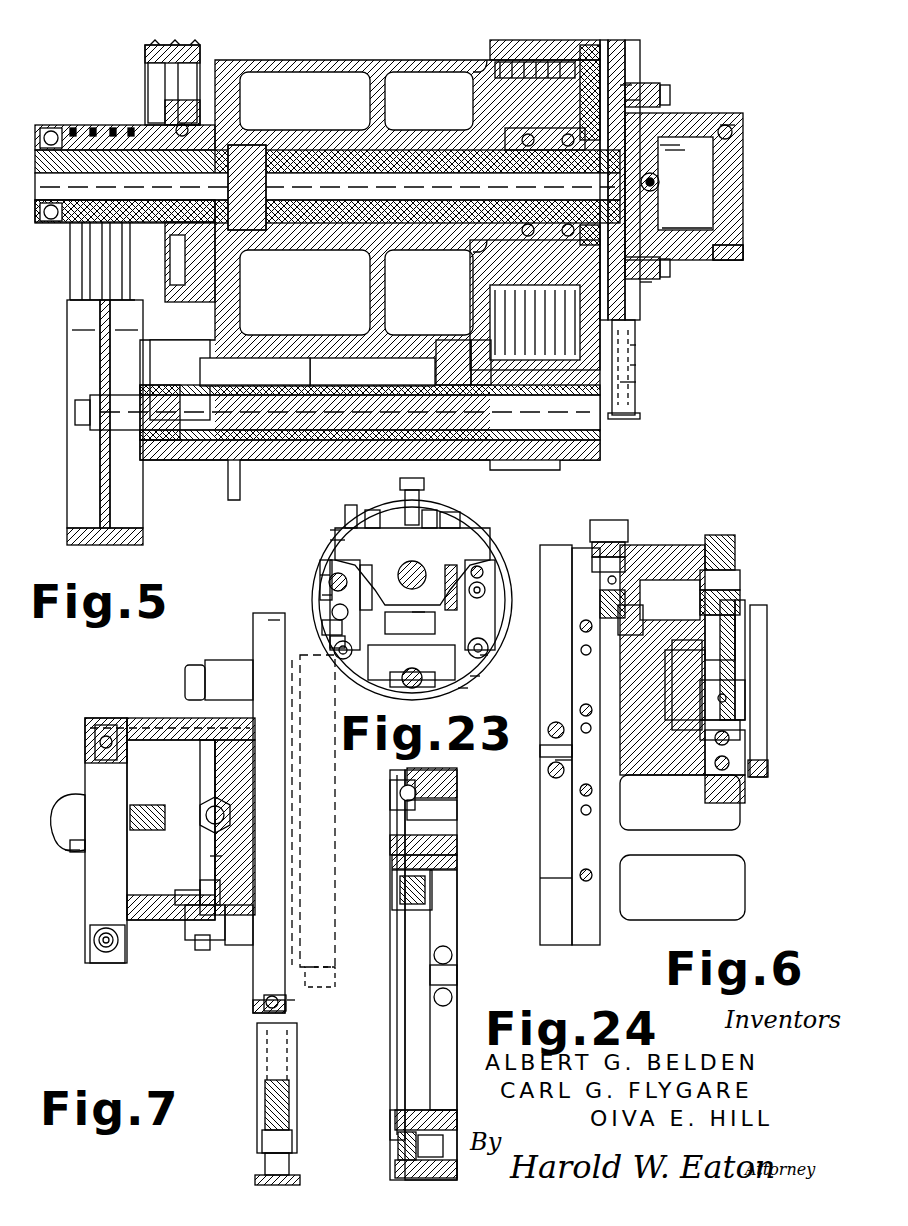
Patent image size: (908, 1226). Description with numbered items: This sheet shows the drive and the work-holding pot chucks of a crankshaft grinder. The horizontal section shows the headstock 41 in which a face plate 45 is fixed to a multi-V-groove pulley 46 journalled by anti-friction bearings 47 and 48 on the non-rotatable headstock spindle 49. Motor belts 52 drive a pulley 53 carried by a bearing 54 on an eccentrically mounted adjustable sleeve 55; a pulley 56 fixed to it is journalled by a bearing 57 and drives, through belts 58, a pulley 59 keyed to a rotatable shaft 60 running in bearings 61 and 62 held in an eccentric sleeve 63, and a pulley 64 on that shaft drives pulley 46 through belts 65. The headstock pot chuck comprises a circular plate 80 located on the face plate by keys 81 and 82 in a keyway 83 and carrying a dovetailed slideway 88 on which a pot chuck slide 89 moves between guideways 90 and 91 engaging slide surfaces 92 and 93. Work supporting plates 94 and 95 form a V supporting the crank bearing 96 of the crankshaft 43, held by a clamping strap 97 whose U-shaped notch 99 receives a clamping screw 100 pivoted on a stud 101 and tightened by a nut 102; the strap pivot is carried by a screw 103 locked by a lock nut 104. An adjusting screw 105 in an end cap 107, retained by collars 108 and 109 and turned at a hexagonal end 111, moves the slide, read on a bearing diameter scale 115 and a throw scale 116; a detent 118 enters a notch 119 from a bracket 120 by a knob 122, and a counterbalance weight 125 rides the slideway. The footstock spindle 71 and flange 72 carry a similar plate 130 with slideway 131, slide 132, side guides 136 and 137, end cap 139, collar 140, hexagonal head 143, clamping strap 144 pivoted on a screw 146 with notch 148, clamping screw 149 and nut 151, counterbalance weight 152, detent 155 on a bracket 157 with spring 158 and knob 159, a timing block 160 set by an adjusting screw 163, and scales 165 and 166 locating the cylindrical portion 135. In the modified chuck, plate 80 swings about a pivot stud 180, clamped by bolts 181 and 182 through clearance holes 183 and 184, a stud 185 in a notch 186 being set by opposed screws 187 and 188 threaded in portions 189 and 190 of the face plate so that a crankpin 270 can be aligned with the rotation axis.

In FIG. 5, the headstock 41 is at (330, 85).
In FIG. 23, the crankshaft 43 is at (412, 588).
In FIG. 6, the crankshaft 43 is at (775, 758).
In FIG. 7, the crankshaft 43 is at (72, 850).
In FIG. 5, the face plate 45 is at (590, 45).
In FIG. 23, the face plate 45 is at (478, 676).
In FIG. 24, the face plate 45 is at (392, 775).
In FIG. 5, the multi-V-groove pulley 46 is at (492, 62).
In FIG. 5, the anti-friction bearing 47 is at (526, 134).
In FIG. 5, the anti-friction bearing 48 is at (568, 134).
In FIG. 5, the headstock spindle 49 is at (410, 150).
In FIG. 5, the multiple V-belts 52 is at (190, 44).
In FIG. 5, the multi-V-groove pulley 53 is at (152, 75).
In FIG. 5, the anti-friction bearing 54 is at (172, 103).
In FIG. 5, the eccentrically mounted adjustable sleeve 55 is at (98, 194).
In FIG. 5, the multi-V-groove pulley 56 is at (55, 126).
In FIG. 5, the anti-friction bearing 57 is at (52, 222).
In FIG. 5, the multiple V-belts 58 is at (112, 128).
In FIG. 5, the multi-V-groove pulley 59 is at (75, 330).
In FIG. 5, the rotatable shaft 60 is at (240, 410).
In FIG. 5, the anti-friction bearing 61 is at (175, 445).
In FIG. 5, the anti-friction bearing 62 is at (438, 350).
In FIG. 5, the adjustably mounted eccentric sleeve 63 is at (317, 371).
In FIG. 5, the multi-V-groove pulley 64 is at (476, 350).
In FIG. 5, the multiple V-belts 65 is at (512, 62).
In FIG. 7, the rotatable spindle 71 is at (322, 811).
In FIG. 7, the flange 72 is at (319, 982).
In FIG. 5, the circular plate 80 is at (605, 60).
In FIG. 23, the circular plate 80 is at (485, 655).
In FIG. 24, the circular plate 80 is at (452, 828).
In FIG. 6, the circular plate 80 is at (555, 878).
In FIG. 5, the key 81 is at (636, 325).
In FIG. 5, the key 82 is at (630, 85).
In FIG. 5, the keyway 83 is at (632, 75).
In FIG. 5, the dovetailed slideway 88 is at (670, 166).
In FIG. 23, the dovetailed slideway 88 is at (420, 615).
In FIG. 6, the dovetailed slideway 88 is at (588, 548).
In FIG. 5, the pot chuck slide 89 is at (740, 200).
In FIG. 23, the pot chuck slide 89 is at (411, 662).
In FIG. 6, the pot chuck slide 89 is at (622, 680).
In FIG. 5, the slideway or guideway 90 is at (650, 282).
In FIG. 23, the slideway or guideway 90 is at (333, 650).
In FIG. 6, the slideway or guideway 90 is at (622, 705).
In FIG. 5, the slideway or guideway 91 is at (660, 107).
In FIG. 23, the slideway or guideway 91 is at (485, 638).
In FIG. 5, the slide surface 92 is at (660, 268).
In FIG. 6, the slide surface 92 is at (565, 846).
In FIG. 5, the slide surface 93 is at (637, 100).
In FIG. 23, the work supporting plate 94 is at (376, 591).
In FIG. 23, the work supporting plate 95 is at (442, 591).
In FIG. 23, the crank bearing 96 is at (403, 625).
In FIG. 6, the crank bearing 96 is at (742, 668).
In FIG. 23, the clamping strap 97 is at (325, 560).
In FIG. 6, the clamping strap 97 is at (720, 640).
In FIG. 6, the U-shaped notch 99 is at (742, 600).
In FIG. 23, the clamping screw 100 is at (330, 565).
In FIG. 6, the clamping screw 100 is at (738, 545).
In FIG. 23, the stud 101 is at (322, 612).
In FIG. 6, the stud 101 is at (750, 718).
In FIG. 23, the nut 102 is at (335, 540).
In FIG. 6, the nut 102 is at (742, 575).
In FIG. 5, the screw 103 is at (728, 124).
In FIG. 6, the lock nut 104 is at (748, 685).
In FIG. 5, the adjusting screw 105 is at (665, 200).
In FIG. 23, the adjusting screw 105 is at (405, 563).
In FIG. 6, the adjusting screw 105 is at (628, 600).
In FIG. 6, the end cap 107 is at (628, 566).
In FIG. 6, the collar 108 is at (628, 550).
In FIG. 6, the collar 109 is at (622, 580).
In FIG. 6, the hexagonally shaped end 111 is at (630, 530).
In FIG. 23, the bearing diameter scale 115 is at (325, 625).
In FIG. 6, the bearing diameter scale 115 is at (696, 766).
In FIG. 6, the throw scale 116 is at (644, 620).
In FIG. 5, the spring-pressed detent 118 is at (636, 365).
In FIG. 5, the notch 119 is at (636, 345).
In FIG. 23, the notch 119 is at (322, 640).
In FIG. 24, the notch 119 is at (458, 972).
In FIG. 6, the notch 119 is at (560, 760).
In FIG. 5, the bracket 120 is at (636, 382).
In FIG. 5, the actuating knob 122 is at (640, 417).
In FIG. 5, the counterbalance weight 125 is at (700, 120).
In FIG. 23, the counterbalance weight 125 is at (465, 688).
In FIG. 6, the counterbalance weight 125 is at (740, 882).
In FIG. 7, the supporting plate 130 is at (262, 640).
In FIG. 7, the dovetailed slideway 131 is at (242, 765).
In FIG. 7, the pot chuck slide 132 is at (162, 728).
In FIG. 7, the cylindrical portion 135 is at (95, 782).
In FIG. 7, the side guide or slideway block 136 is at (226, 680).
In FIG. 7, the side guide or slideway block 137 is at (260, 965).
In FIG. 7, the end cap 139 is at (215, 856).
In FIG. 7, the collar 140 is at (205, 805).
In FIG. 7, the hexagonally shaped head 143 is at (205, 825).
In FIG. 7, the clamping strap 144 is at (85, 720).
In FIG. 7, the screw 146 is at (106, 725).
In FIG. 7, the U-shaped notch 148 is at (105, 965).
In FIG. 7, the clamping screw 149 is at (94, 938).
In FIG. 7, the clamping nut 151 is at (100, 945).
In FIG. 7, the counterbalance weight 152 is at (143, 725).
In FIG. 7, the spring-pressed detent 155 is at (262, 1040).
In FIG. 7, the bracket 157 is at (265, 1085).
In FIG. 7, the spring 158 is at (262, 1105).
In FIG. 7, the actuating knob 159 is at (256, 1178).
In FIG. 7, the block 160 is at (288, 1015).
In FIG. 7, the adjusting screw 163 is at (290, 1000).
In FIG. 7, the throw scale 165 is at (190, 955).
In FIG. 7, the bearing diameter scale 166 is at (195, 888).
In FIG. 23, the pivot stud 180 is at (421, 668).
In FIG. 24, the pivot stud 180 is at (405, 1183).
In FIG. 23, the clamping bolt 181 is at (322, 595).
In FIG. 24, the clamping bolt 181 is at (440, 905).
In FIG. 23, the clamping bolt 182 is at (485, 580).
In FIG. 23, the clearance hole 183 is at (320, 575).
In FIG. 24, the clearance hole 183 is at (400, 912).
In FIG. 23, the clearance hole 184 is at (485, 572).
In FIG. 23, the stud 185 is at (425, 510).
In FIG. 24, the stud 185 is at (458, 808).
In FIG. 23, the notch 186 is at (375, 501).
In FIG. 24, the notch 186 is at (392, 843).
In FIG. 23, the adjusting screw 187 is at (345, 512).
In FIG. 23, the adjusting screw 188 is at (460, 520).
In FIG. 24, the adjusting screw 188 is at (398, 800).
In FIG. 23, the portion of face plate 189 is at (335, 530).
In FIG. 23, the portion of face plate 190 is at (425, 503).
In FIG. 24, the portion of face plate 190 is at (415, 775).
In FIG. 6, the crankpin 270 is at (742, 640).